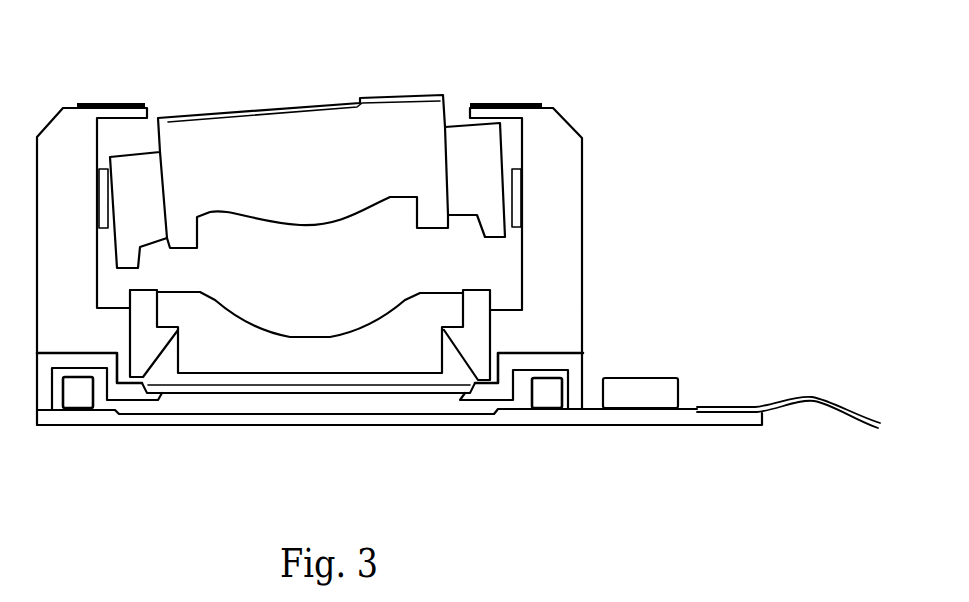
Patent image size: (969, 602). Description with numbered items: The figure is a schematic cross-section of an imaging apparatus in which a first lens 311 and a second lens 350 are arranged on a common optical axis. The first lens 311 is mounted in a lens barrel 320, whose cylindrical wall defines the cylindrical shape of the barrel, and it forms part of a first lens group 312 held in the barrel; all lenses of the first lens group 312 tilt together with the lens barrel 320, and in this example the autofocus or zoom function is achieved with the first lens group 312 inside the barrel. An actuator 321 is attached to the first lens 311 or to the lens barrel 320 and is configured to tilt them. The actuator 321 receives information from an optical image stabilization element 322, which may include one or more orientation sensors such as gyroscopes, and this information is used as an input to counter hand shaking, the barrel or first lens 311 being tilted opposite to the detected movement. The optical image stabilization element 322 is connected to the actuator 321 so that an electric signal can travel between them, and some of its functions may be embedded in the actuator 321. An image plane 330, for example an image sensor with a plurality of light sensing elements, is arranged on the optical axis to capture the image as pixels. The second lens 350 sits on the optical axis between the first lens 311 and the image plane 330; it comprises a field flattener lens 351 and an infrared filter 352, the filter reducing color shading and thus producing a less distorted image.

The first lens 311 is at (275, 114).
The first lens group 312 is at (402, 123).
The lens barrel 320 is at (480, 187).
The actuator 321 is at (98, 177).
The optical image stabilization element 322 is at (633, 377).
The image plane 330 is at (365, 413).
The second lens 350 is at (253, 358).
The field flattener lens 351 is at (287, 337).
The infrared filter 352 is at (330, 393).